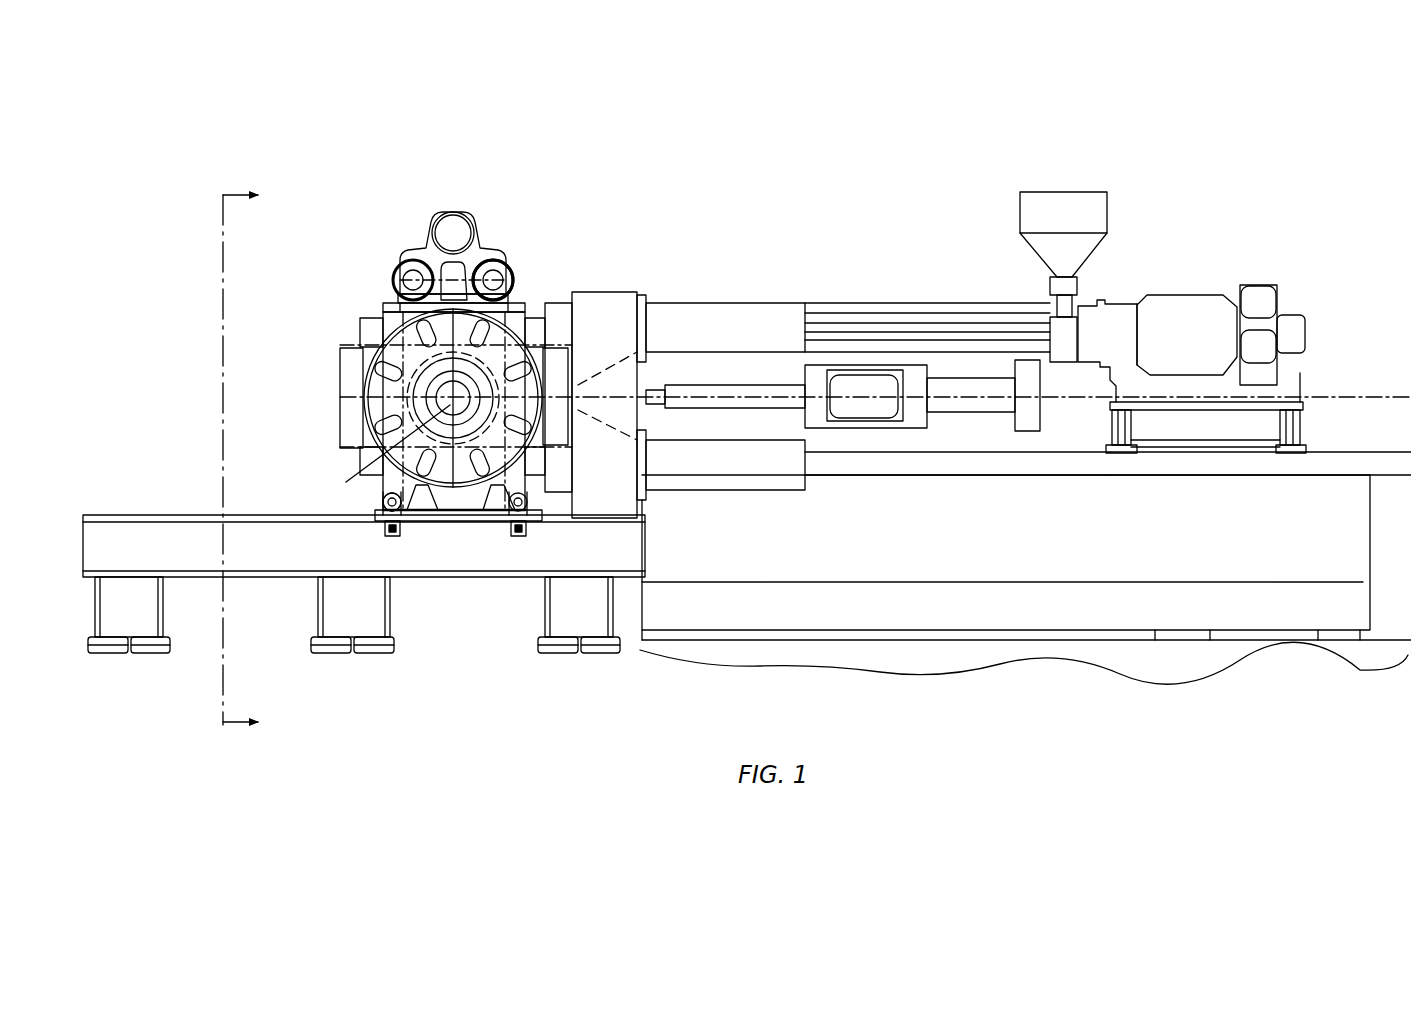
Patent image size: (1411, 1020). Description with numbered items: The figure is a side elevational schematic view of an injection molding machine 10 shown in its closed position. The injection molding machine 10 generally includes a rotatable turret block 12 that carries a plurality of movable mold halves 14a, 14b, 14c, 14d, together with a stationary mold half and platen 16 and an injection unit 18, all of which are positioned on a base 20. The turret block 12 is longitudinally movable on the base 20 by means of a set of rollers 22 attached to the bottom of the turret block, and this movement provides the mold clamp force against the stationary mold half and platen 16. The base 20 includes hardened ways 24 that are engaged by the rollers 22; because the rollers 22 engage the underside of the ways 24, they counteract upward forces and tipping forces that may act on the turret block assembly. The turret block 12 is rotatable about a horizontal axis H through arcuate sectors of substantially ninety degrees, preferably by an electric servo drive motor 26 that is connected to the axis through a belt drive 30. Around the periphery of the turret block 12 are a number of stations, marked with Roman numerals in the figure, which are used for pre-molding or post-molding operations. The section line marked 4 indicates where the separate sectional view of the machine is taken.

The injection molding machine 10 is at (664, 188).
The rotatable turret block 12 is at (318, 338).
The movable mold half 14a is at (565, 372).
The movable mold half 14b is at (490, 271).
The movable mold half 14c is at (345, 432).
The movable mold half 14d is at (487, 520).
The stationary mold half and platen 16 is at (600, 490).
The injection unit 18 is at (1150, 216).
The base 20 is at (830, 700).
The rollers 22 is at (392, 524).
The hardened ways 24 is at (151, 522).
The electric servo drive motor 26 is at (449, 226).
The belt drive 30 is at (478, 217).
The section line 4- 4 is at (253, 460).